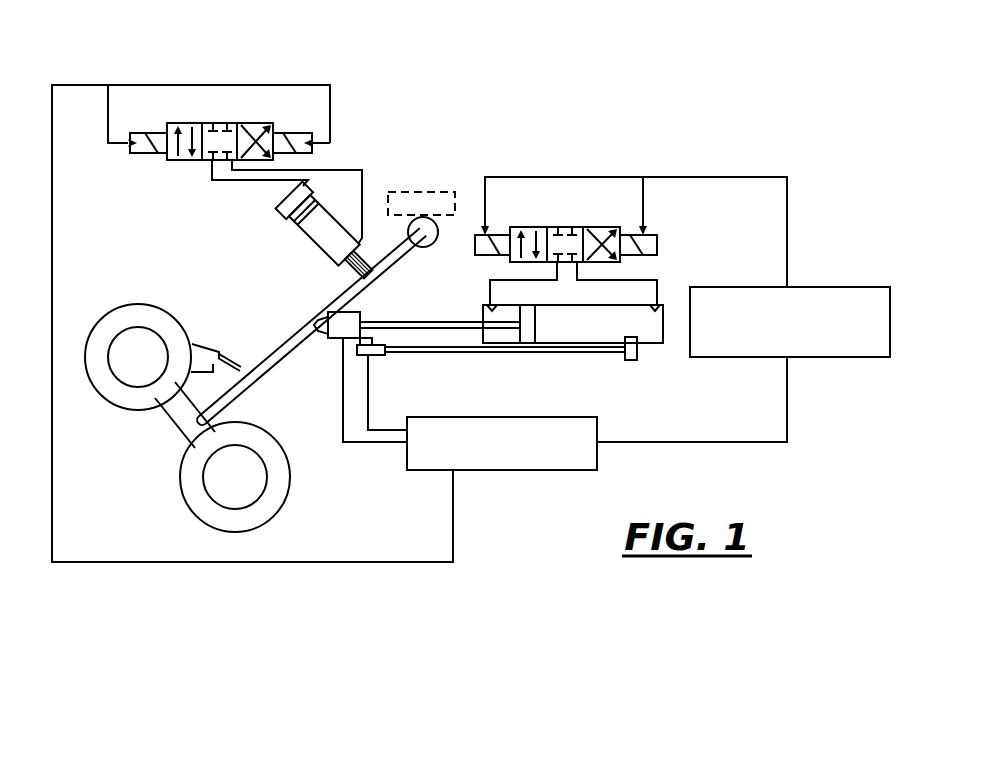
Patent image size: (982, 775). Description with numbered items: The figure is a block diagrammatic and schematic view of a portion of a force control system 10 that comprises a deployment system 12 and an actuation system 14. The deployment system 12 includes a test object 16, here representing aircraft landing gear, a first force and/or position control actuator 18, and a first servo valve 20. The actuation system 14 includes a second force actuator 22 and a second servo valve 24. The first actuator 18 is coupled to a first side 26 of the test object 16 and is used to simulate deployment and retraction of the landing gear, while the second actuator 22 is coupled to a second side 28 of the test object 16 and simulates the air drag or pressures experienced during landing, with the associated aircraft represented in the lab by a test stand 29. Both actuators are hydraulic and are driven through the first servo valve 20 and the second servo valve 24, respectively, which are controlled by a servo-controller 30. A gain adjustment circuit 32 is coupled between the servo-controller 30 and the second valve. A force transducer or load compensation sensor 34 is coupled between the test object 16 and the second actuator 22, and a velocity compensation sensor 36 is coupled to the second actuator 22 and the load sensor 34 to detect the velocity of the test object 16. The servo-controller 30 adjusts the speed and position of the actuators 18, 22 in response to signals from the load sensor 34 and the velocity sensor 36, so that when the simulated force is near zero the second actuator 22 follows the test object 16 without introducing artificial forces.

The force control system 10 is at (788, 108).
The deployment system 12 is at (392, 117).
The actuation system 14 is at (598, 140).
The test object 16 is at (270, 343).
The first force and/or position control actuator 18 is at (281, 210).
The first servo valve 20 is at (238, 123).
The second force actuator 22 is at (651, 343).
The second servo valve 24 is at (590, 228).
The first side 26 is at (242, 391).
The second side 28 is at (279, 354).
The test stand 29 is at (449, 216).
The servo-controller 30 is at (537, 417).
The gain adjustment circuit 32 is at (825, 287).
The load compensation sensor 34 is at (360, 311).
The velocity compensation sensor 36 is at (376, 356).